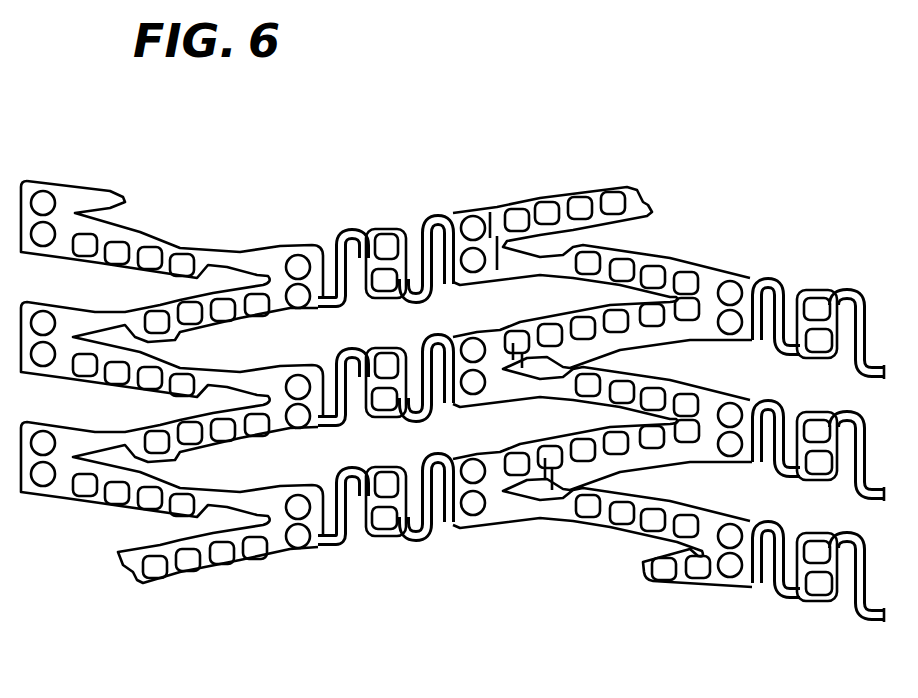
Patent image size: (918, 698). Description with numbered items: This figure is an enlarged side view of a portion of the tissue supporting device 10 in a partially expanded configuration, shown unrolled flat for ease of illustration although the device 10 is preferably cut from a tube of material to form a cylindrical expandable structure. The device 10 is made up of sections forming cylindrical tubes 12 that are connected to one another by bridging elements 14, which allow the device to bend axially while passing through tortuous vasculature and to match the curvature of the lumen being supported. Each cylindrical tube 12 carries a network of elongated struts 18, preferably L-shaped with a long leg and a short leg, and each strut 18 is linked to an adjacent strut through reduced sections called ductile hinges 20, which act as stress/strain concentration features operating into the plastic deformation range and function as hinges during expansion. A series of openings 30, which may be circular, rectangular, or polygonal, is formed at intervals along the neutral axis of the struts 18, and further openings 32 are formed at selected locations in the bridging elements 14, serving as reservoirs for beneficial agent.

The tissue supporting device 10 is at (735, 158).
The cylindrical tube 12 is at (155, 594).
The bridging element 14 is at (344, 233).
The elongated strut 18 is at (173, 242).
The ductile hinge 20 is at (238, 254).
The opening 30 is at (540, 208).
The opening 32 is at (389, 238).